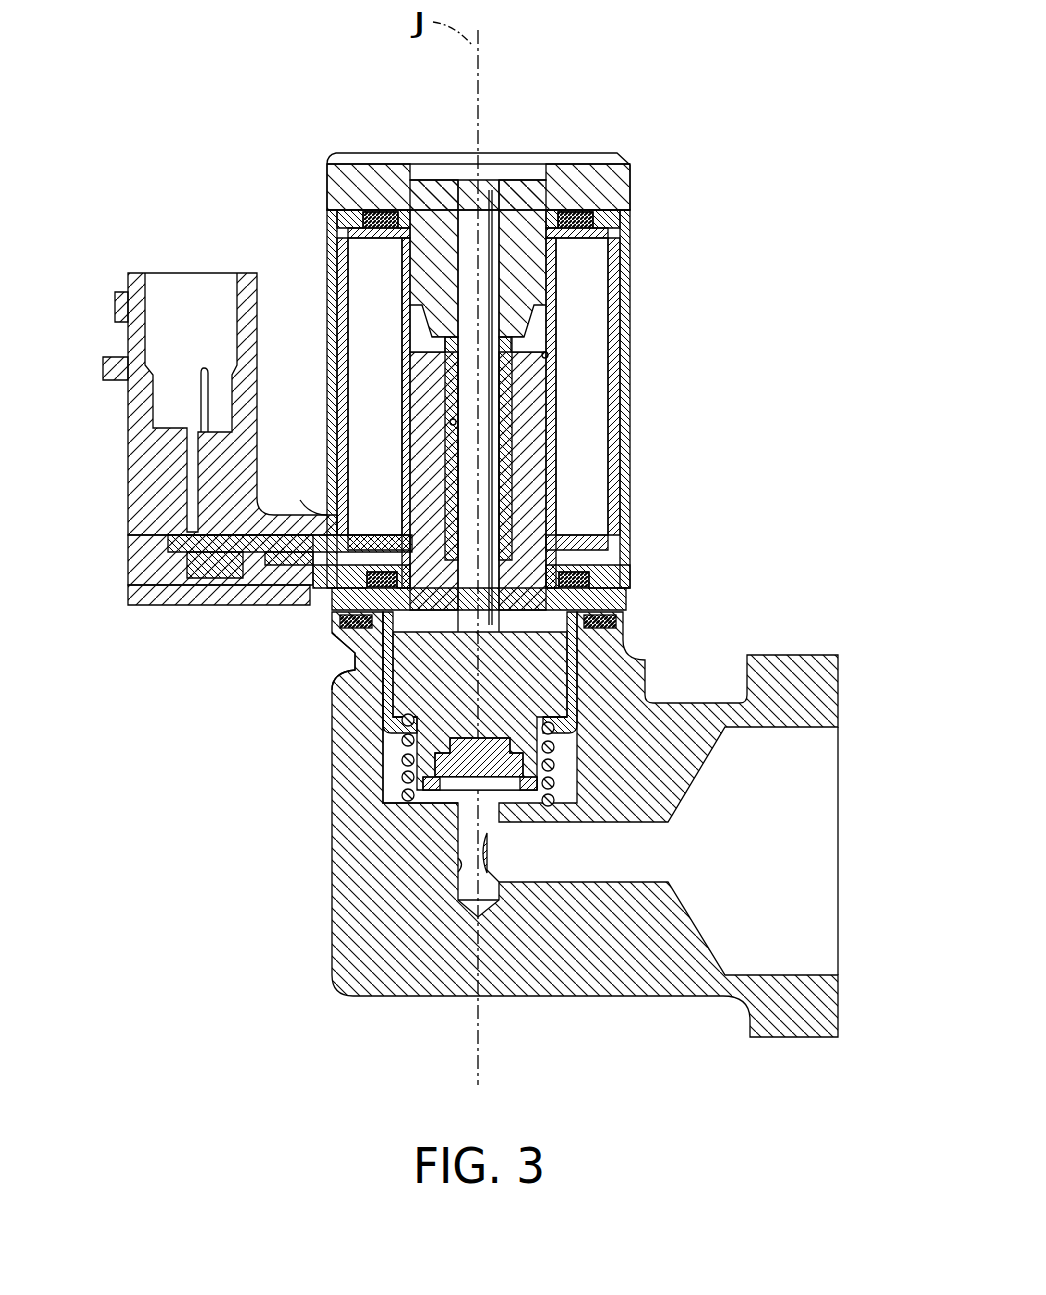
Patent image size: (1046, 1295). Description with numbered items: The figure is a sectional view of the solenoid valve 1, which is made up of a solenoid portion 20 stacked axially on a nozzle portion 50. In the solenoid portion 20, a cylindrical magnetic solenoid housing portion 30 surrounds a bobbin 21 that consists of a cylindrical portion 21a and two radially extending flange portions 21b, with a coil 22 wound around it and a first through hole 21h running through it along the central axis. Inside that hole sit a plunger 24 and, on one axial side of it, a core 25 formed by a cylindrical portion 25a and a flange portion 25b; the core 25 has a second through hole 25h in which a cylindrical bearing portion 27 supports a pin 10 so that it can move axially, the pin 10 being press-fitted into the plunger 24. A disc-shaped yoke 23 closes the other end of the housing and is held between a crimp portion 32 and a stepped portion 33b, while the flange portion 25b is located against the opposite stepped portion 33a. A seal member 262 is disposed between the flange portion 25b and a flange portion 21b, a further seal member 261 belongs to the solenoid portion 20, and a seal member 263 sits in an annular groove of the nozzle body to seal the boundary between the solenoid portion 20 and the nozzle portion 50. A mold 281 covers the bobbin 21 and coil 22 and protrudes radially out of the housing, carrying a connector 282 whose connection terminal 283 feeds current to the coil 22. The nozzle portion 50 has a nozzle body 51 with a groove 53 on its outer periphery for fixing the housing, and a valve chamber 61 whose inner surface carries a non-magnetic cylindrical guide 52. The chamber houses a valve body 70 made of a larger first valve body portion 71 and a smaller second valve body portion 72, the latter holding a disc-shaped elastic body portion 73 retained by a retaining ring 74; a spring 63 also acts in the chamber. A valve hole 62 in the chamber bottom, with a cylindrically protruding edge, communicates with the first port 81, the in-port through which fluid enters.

The solenoid valve 1 is at (195, 95).
The pin 10 is at (488, 186).
The solenoid portion 20 is at (745, 396).
The bobbin 21 is at (596, 530).
The cylindrical portion 21a is at (558, 436).
The flange portions 21b is at (600, 230).
The first through hole 21h is at (548, 356).
The coil 22 is at (353, 312).
The yoke 23 is at (583, 176).
The plunger 24 is at (522, 181).
The core 25 is at (286, 422).
The cylindrical portion 25a is at (422, 452).
The flange portion 25b is at (333, 568).
The second through hole 25h is at (455, 420).
The bearing portion 27 is at (515, 388).
The solenoid housing portion 30 is at (330, 247).
The crimp portion 32 is at (328, 158).
The stepped portion 33a is at (600, 592).
The stepped portion 33b is at (336, 207).
The nozzle portion 50 is at (215, 785).
The nozzle body 51 is at (650, 985).
The guide 52 is at (390, 702).
The groove 53 is at (347, 642).
The valve chamber 61 is at (592, 742).
The valve hole 62 is at (460, 805).
The spring 63 is at (498, 760).
The valve body 70 is at (697, 632).
The first valve body portion 71 is at (566, 650).
The second valve body portion 72 is at (560, 682).
The elastic body portion 73 is at (435, 778).
The retaining ring 74 is at (410, 792).
The first port 81 is at (463, 868).
The seal member 261 is at (578, 218).
The seal member 262 is at (606, 576).
The seal member 263 is at (612, 623).
The mold 281 is at (614, 286).
The connector 282 is at (136, 507).
The connection terminal 283 is at (200, 405).